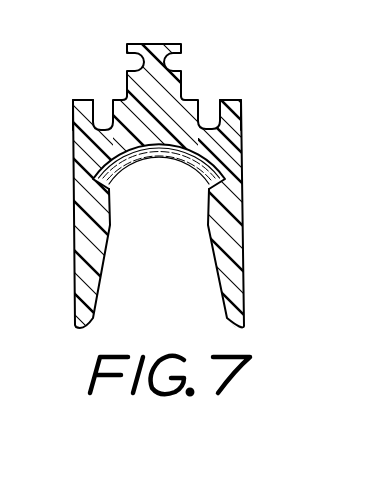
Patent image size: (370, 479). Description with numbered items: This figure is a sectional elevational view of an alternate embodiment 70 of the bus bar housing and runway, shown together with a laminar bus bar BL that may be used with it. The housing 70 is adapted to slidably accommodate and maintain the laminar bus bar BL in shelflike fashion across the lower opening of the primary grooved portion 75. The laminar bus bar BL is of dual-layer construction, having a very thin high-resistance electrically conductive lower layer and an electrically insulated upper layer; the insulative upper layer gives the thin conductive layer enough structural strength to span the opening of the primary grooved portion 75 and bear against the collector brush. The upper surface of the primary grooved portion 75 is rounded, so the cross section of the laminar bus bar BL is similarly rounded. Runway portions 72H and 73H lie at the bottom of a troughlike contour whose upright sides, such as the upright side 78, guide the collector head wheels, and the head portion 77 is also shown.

The alternate embodiment 70 is at (249, 200).
The runway portion 72H is at (100, 130).
The runway portion 73H is at (208, 128).
The primary grooved portion 75 is at (200, 159).
The head portion 77 is at (140, 44).
The upright side 78 is at (72, 100).
The laminar bus bar BL is at (180, 166).